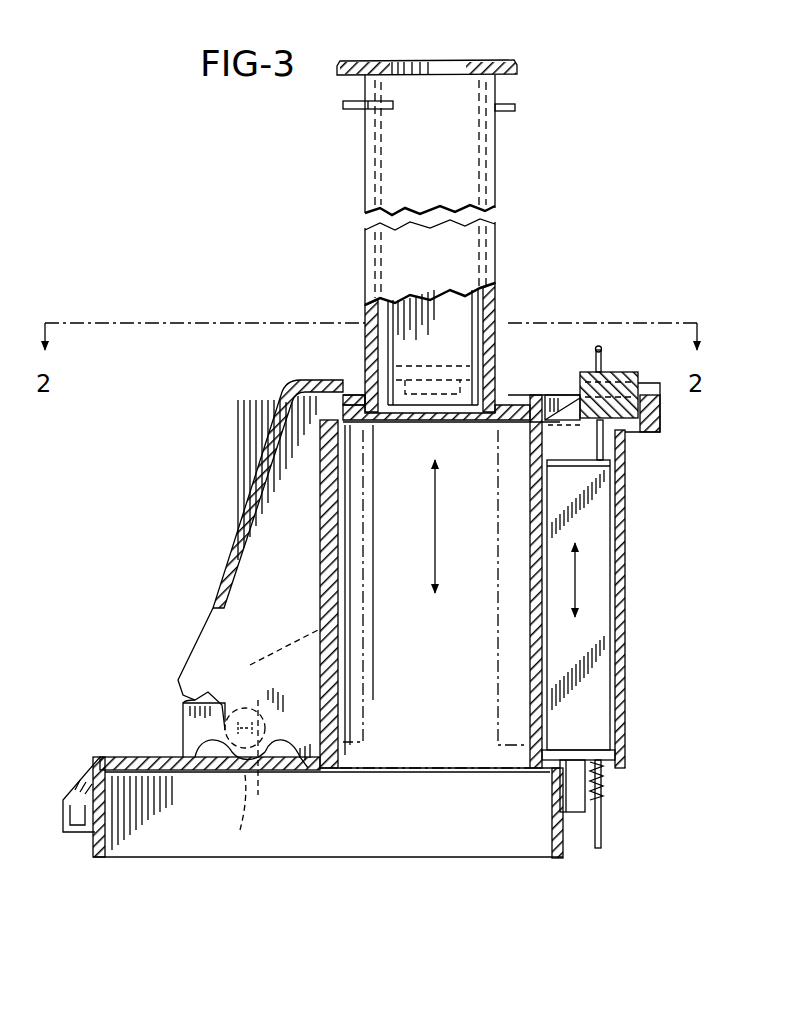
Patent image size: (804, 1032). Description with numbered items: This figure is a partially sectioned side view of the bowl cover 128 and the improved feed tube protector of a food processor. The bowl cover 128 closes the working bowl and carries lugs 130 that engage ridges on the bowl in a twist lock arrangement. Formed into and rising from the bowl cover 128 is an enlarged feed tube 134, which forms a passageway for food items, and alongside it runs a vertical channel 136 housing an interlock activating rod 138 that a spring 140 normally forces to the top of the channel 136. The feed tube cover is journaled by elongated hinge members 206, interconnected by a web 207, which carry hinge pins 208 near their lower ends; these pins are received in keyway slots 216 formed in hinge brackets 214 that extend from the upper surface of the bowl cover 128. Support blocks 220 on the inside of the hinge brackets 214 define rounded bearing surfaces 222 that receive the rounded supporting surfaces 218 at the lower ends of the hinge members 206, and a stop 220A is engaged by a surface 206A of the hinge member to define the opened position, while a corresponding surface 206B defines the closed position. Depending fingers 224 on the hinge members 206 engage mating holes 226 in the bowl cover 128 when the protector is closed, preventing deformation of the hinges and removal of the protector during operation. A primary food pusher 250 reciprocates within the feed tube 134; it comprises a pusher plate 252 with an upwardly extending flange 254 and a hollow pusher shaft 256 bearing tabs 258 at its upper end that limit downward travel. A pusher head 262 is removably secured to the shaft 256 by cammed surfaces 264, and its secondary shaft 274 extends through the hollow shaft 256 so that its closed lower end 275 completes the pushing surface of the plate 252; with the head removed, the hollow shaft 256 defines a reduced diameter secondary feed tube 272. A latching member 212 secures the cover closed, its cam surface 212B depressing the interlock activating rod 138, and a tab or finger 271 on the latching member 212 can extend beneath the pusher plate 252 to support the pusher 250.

The bowl cover 128 is at (125, 758).
The lugs 130 is at (72, 830).
The feed tube 134 is at (470, 648).
The vertical channel 136 is at (626, 624).
The interlock activating rod 138 is at (597, 598).
The spring 140 is at (603, 778).
The elongated hinge members 206 is at (207, 612).
The surface of elongated hinge member 206A is at (208, 700).
The surface of elongated hinge member 206B is at (262, 775).
The web 207 is at (250, 456).
The hinge pins 208 is at (255, 690).
The latching member 212 is at (608, 372).
The cam surface 212B is at (645, 432).
The hinge brackets 214 is at (178, 720).
The keyway slots 216 is at (262, 715).
The rounded supporting surfaces 218 is at (255, 772).
The feed tube cover support blocks 220 is at (192, 778).
The stop 220A is at (200, 756).
The rounded bearing surfaces 222 is at (202, 775).
The depending fingers 224 is at (303, 775).
The mating holes 226 is at (316, 784).
The primary food pusher 250 is at (360, 255).
The pusher plate 252 is at (357, 430).
The upwardly extending flange 254 is at (502, 428).
The pusher shaft 256 is at (372, 195).
The tabs 258 is at (346, 110).
The pusher head 262 is at (352, 62).
The cammed surfaces 264 is at (505, 92).
The tab or finger 271 is at (570, 405).
The secondary feed tube 272 is at (388, 357).
The secondary shaft 274 is at (486, 170).
The closed lower end 275 is at (387, 590).